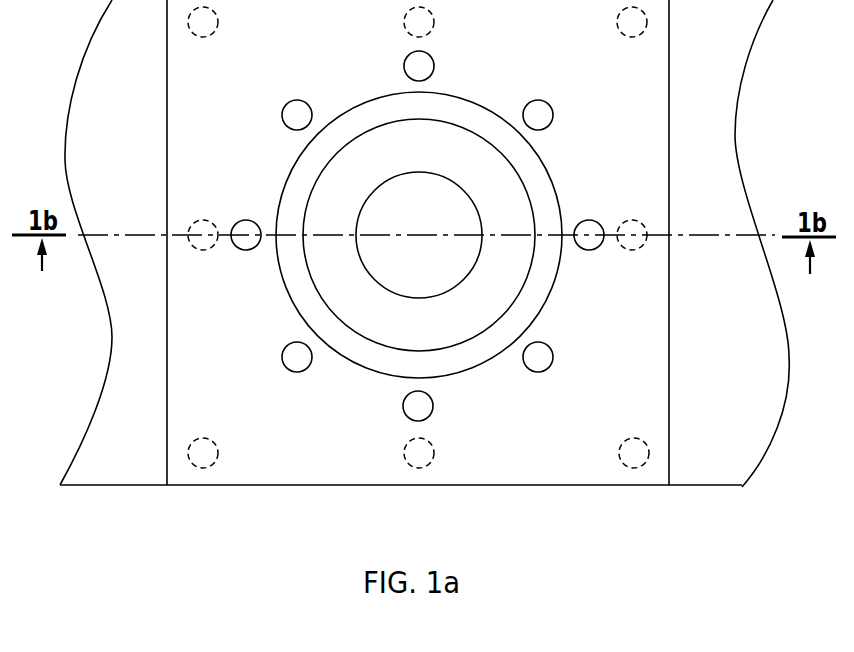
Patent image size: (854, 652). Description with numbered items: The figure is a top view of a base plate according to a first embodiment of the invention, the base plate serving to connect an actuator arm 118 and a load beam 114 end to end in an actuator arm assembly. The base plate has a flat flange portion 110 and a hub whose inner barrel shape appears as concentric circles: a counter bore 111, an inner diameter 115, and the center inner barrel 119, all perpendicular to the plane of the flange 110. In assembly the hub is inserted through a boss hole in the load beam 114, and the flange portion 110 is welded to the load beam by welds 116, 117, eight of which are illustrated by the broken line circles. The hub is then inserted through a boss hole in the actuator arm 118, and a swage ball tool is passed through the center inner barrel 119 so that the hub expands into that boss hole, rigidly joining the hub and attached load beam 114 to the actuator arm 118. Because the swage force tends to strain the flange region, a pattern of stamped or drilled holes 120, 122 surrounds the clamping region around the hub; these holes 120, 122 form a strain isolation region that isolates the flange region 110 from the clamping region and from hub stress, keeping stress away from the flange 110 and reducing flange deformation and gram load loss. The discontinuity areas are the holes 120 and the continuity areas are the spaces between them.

The flange portion 110 is at (225, 99).
The counter bore 111 is at (403, 120).
The load beam 114 is at (137, 99).
The inner diameter 115 is at (375, 190).
The weld 116 is at (200, 221).
The weld 117 is at (632, 221).
The actuator arm 118 is at (722, 82).
The center inner barrel 119 is at (438, 278).
The hole 120 is at (248, 221).
The hole 122 is at (590, 221).